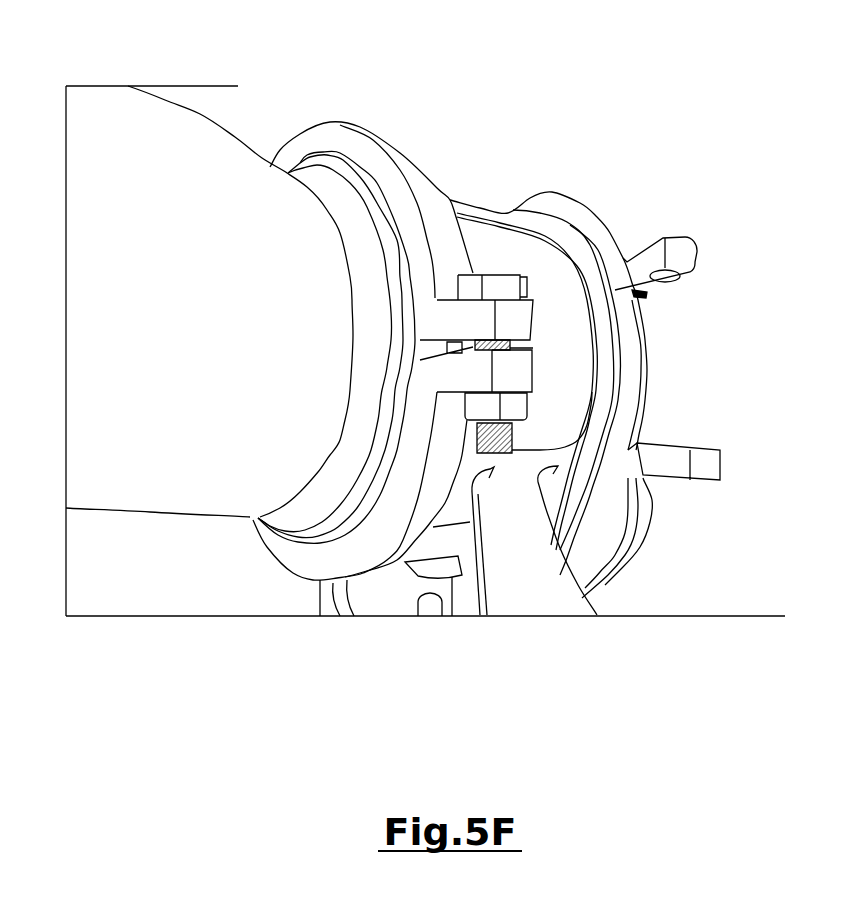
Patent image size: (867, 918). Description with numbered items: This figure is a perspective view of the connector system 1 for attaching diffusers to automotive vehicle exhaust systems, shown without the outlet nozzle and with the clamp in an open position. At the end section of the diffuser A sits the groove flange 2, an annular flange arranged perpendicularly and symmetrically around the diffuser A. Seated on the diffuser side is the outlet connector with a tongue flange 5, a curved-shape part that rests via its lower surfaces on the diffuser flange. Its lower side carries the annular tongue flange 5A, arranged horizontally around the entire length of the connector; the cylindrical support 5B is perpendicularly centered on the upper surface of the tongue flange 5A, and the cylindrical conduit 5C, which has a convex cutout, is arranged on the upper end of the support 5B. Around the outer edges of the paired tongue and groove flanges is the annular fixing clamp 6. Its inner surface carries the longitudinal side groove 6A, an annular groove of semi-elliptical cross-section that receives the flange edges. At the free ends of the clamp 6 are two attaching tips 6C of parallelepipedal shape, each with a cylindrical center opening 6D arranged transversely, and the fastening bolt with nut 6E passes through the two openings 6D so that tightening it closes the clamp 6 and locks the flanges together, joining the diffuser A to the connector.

The connector system 1 is at (315, 558).
The groove flange 2 is at (598, 214).
The outlet connector with a tongue flange 5 is at (139, 465).
The annular tongue flange 5A is at (371, 188).
The cylindrical support 5B is at (309, 184).
The cylindrical conduit 5C is at (83, 467).
The fixing clamp 6 is at (602, 222).
The longitudinal side groove 6A is at (647, 297).
The attaching tips 6C is at (682, 255).
The center opening 6D is at (670, 282).
The fastening bolt with nut 6E is at (480, 275).
The diffuser A is at (523, 242).